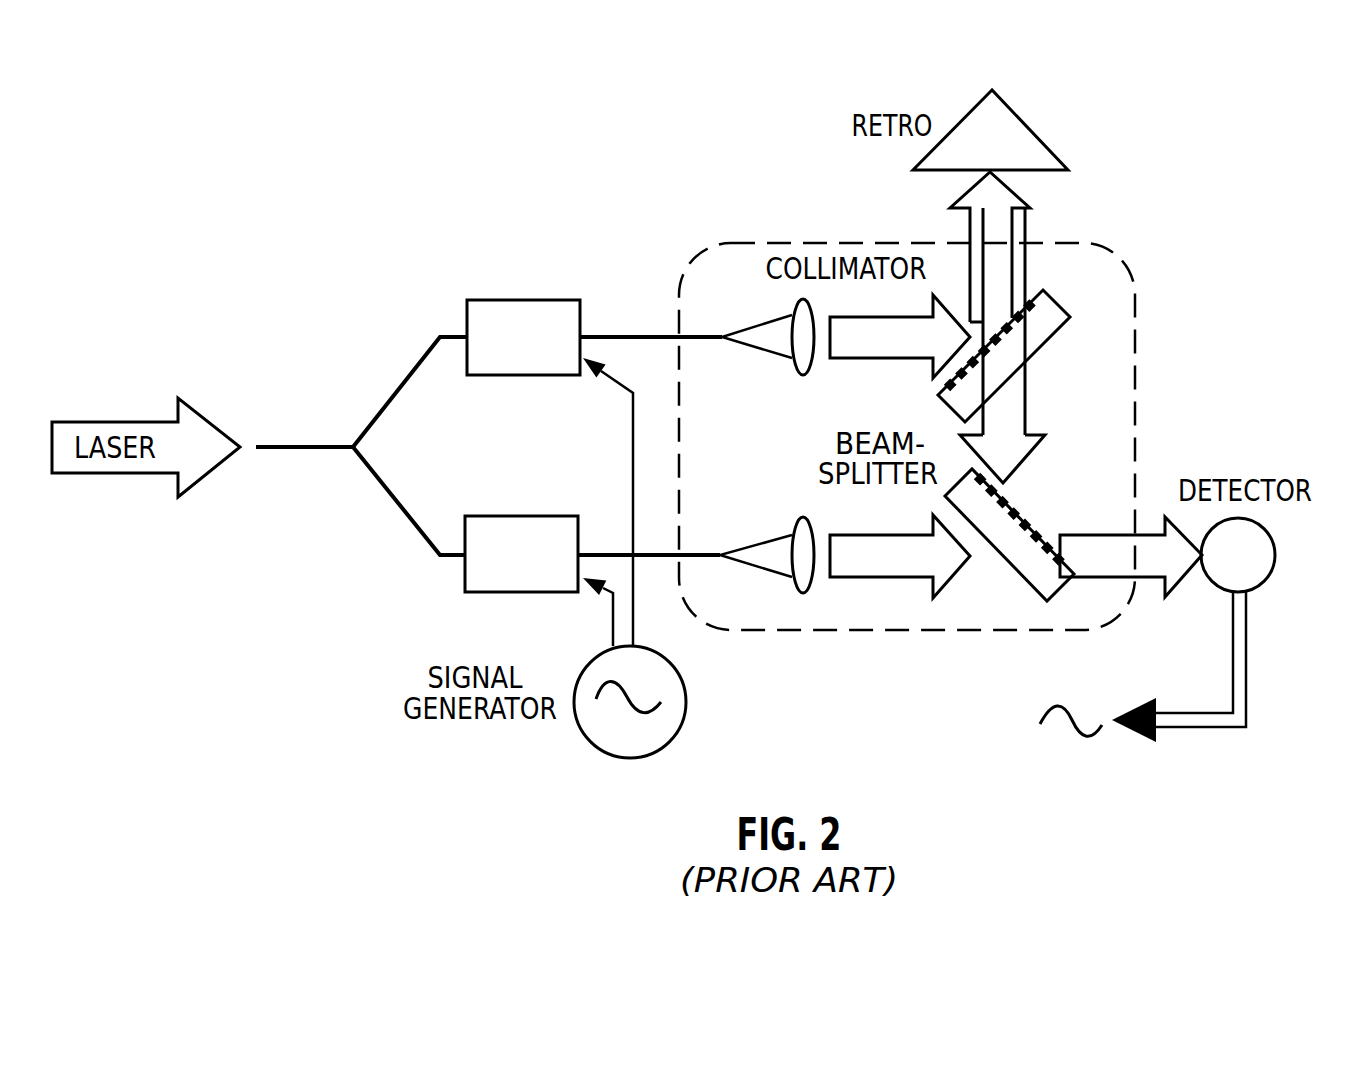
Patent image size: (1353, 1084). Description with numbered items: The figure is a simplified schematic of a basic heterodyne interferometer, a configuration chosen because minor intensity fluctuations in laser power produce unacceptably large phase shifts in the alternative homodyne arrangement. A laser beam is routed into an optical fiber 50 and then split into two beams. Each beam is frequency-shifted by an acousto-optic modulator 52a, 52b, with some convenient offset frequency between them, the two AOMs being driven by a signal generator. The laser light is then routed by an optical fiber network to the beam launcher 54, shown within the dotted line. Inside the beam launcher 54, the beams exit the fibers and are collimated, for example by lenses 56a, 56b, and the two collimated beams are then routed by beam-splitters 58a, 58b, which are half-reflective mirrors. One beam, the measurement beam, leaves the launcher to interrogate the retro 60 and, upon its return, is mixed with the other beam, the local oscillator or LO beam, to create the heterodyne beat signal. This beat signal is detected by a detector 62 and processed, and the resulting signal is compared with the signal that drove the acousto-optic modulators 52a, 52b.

The optical fiber 50 is at (295, 432).
The acousto-optic modulator 52a is at (520, 299).
The acousto-optic modulator 52b is at (515, 515).
The beam launcher 54 is at (1136, 199).
The lens 56a is at (803, 374).
The lens 56b is at (798, 517).
The beam-splitter 58a is at (1043, 343).
The beam-splitter 58b is at (1023, 520).
The retro 60 is at (1013, 110).
The detector 62 is at (1215, 585).